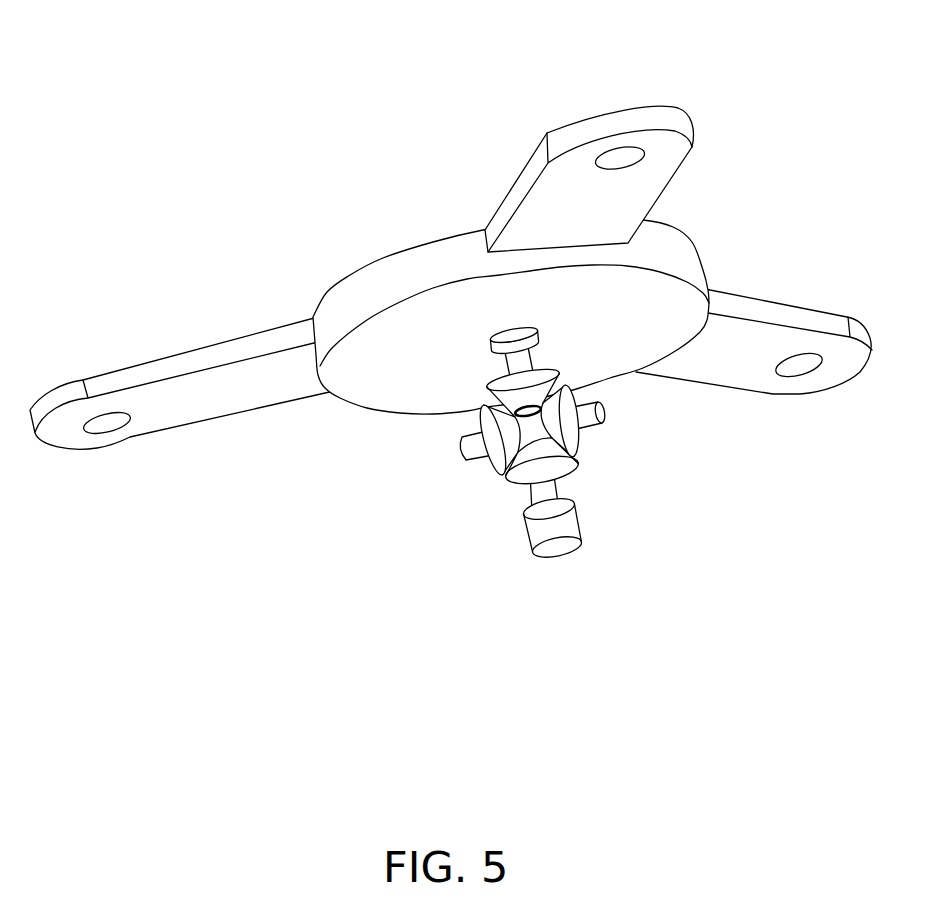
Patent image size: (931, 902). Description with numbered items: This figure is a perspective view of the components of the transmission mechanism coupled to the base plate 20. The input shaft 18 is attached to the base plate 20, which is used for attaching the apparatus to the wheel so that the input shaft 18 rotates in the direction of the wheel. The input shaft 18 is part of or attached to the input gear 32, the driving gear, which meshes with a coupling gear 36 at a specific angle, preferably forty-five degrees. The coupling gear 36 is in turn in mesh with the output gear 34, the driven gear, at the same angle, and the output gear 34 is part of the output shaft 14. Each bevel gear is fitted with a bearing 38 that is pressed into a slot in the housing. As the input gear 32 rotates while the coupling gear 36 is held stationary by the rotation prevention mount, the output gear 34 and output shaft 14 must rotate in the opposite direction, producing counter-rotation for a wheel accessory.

The output shaft 14 is at (557, 560).
The input shaft 18 is at (545, 332).
The base plate 20 is at (560, 126).
The input gear 32 is at (559, 365).
The output gear 34 is at (570, 480).
The coupling gear 36 is at (586, 448).
The bearing 38 is at (611, 413).